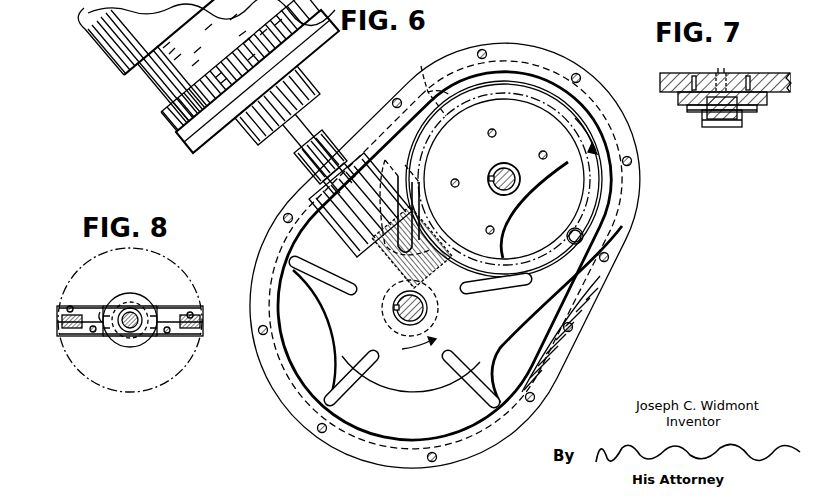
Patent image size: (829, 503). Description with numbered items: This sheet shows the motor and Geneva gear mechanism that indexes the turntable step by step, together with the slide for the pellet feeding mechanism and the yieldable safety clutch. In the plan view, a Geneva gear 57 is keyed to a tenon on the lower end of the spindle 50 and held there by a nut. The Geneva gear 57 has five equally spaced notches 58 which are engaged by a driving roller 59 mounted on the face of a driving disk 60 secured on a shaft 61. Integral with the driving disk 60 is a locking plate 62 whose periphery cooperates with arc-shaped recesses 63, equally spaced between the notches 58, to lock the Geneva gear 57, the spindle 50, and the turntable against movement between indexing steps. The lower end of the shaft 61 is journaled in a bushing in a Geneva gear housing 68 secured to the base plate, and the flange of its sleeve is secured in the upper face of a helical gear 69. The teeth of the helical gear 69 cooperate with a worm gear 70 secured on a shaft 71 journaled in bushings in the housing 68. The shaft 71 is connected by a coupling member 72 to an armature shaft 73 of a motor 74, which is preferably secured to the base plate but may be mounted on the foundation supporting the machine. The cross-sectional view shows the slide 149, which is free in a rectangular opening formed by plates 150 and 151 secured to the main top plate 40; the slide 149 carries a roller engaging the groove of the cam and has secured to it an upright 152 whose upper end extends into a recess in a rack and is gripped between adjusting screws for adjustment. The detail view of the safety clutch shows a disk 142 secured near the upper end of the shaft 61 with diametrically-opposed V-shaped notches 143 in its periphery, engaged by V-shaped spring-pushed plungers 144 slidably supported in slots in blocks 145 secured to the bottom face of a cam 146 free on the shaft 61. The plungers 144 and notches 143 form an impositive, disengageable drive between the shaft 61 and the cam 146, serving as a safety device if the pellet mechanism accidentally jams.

In FIG. 7, the main top plate 40 is at (662, 77).
In FIG. 6, the spindle 50 is at (396, 316).
In FIG. 6, the Geneva gear 57 is at (392, 375).
In FIG. 6, the notches 58 is at (421, 176).
In FIG. 6, the driving roller 59 is at (584, 237).
In FIG. 6, the driving disk 60 is at (600, 208).
In FIG. 6, the shaft 61 is at (521, 158).
In FIG. 8, the shaft 61 is at (128, 333).
In FIG. 6, the locking plate 62 is at (512, 210).
In FIG. 6, the arc-shaped recesses 63 is at (460, 201).
In FIG. 6, the Geneva gear housing 68 is at (456, 64).
In FIG. 6, the helical gear 69 is at (423, 71).
In FIG. 6, the worm gear 70 is at (406, 276).
In FIG. 6, the shaft 71 is at (382, 247).
In FIG. 6, the coupling member 72 is at (327, 140).
In FIG. 6, the armature shaft 73 is at (318, 112).
In FIG. 6, the motor 74 is at (330, 53).
In FIG. 8, the disk 142 is at (130, 294).
In FIG. 8, the V-shaped notches 143 is at (101, 311).
In FIG. 8, the spring-pushed plungers 144 is at (96, 334).
In FIG. 8, the blocks 145 is at (60, 334).
In FIG. 8, the cam 146 is at (160, 384).
In FIG. 7, the slide 149 is at (712, 128).
In FIG. 7, the plate 150 is at (743, 124).
In FIG. 7, the plate 151 is at (766, 100).
In FIG. 7, the upright 152 is at (719, 70).